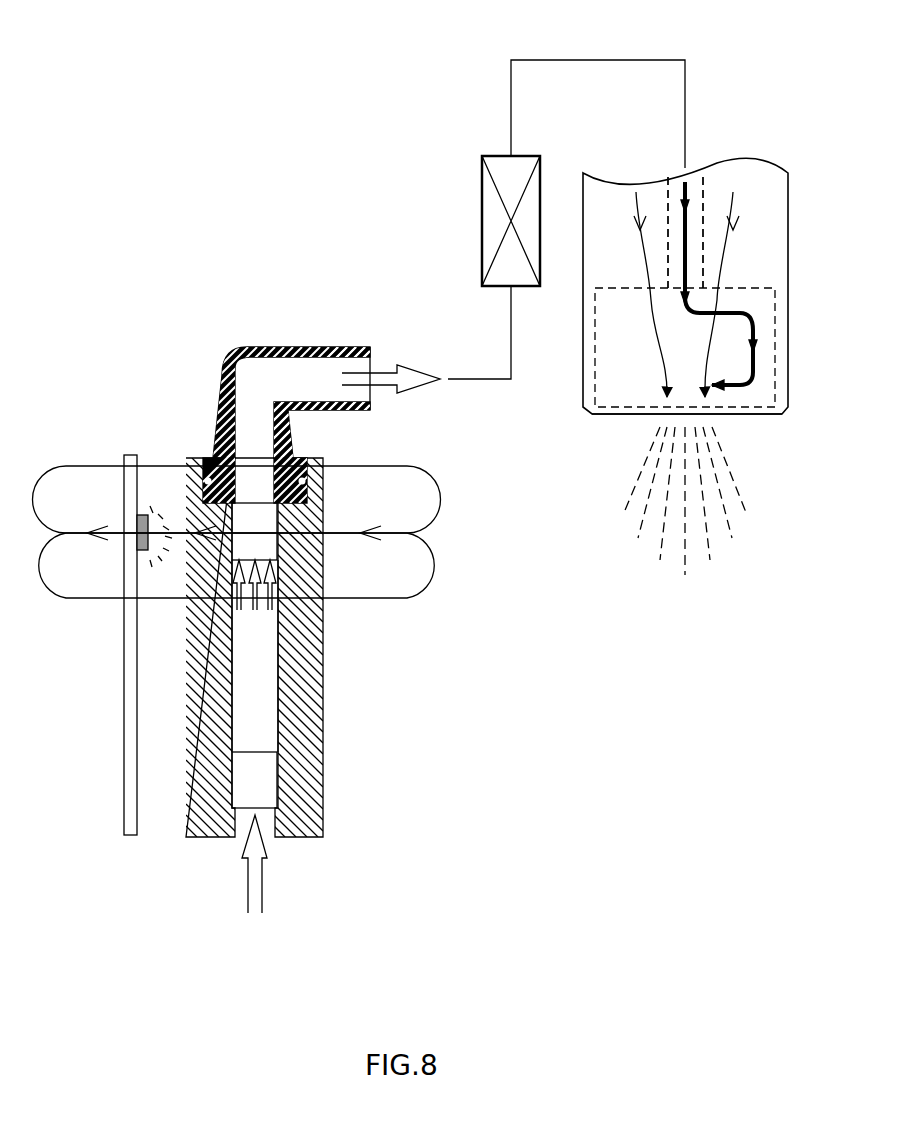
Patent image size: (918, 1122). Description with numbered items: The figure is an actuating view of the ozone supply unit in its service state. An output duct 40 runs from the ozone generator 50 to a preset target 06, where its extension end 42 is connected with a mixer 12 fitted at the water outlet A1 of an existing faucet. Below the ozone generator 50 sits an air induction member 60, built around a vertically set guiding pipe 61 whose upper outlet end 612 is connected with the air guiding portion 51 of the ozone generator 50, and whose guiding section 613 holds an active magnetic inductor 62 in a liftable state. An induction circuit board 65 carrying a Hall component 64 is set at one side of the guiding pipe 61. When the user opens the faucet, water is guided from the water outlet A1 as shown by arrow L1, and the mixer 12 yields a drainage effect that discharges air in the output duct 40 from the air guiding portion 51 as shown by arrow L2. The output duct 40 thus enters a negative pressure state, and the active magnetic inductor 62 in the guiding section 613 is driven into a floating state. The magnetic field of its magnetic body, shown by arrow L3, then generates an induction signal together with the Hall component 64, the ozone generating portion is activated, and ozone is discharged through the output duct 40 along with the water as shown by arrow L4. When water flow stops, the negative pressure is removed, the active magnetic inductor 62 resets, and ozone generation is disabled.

The output duct 40 is at (587, 60).
The ozone generator 50 is at (482, 205).
The air guiding portion 51 is at (278, 345).
The arrow showing air discharge L2 is at (378, 372).
The air induction member 60 is at (352, 645).
The guiding pipe 61 is at (325, 678).
The upper outlet end 612 is at (307, 486).
The guiding section 613 is at (281, 690).
The active magnetic inductor 62 is at (276, 553).
The Hall component 64 is at (147, 513).
The induction circuit board 65 is at (124, 484).
The arrow showing magnetic field L3 is at (440, 565).
The preset target 06 is at (590, 414).
The mixer 12 is at (595, 380).
The extension end 42 is at (703, 263).
The water outlet A1 is at (618, 416).
The arrow showing water flow L1 is at (745, 388).
The arrow showing ozone discharge L4 is at (727, 233).